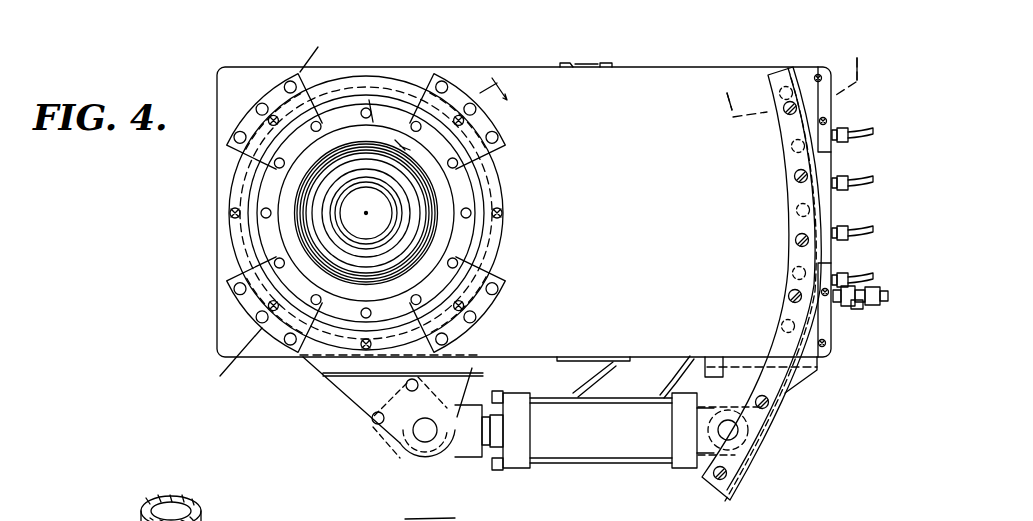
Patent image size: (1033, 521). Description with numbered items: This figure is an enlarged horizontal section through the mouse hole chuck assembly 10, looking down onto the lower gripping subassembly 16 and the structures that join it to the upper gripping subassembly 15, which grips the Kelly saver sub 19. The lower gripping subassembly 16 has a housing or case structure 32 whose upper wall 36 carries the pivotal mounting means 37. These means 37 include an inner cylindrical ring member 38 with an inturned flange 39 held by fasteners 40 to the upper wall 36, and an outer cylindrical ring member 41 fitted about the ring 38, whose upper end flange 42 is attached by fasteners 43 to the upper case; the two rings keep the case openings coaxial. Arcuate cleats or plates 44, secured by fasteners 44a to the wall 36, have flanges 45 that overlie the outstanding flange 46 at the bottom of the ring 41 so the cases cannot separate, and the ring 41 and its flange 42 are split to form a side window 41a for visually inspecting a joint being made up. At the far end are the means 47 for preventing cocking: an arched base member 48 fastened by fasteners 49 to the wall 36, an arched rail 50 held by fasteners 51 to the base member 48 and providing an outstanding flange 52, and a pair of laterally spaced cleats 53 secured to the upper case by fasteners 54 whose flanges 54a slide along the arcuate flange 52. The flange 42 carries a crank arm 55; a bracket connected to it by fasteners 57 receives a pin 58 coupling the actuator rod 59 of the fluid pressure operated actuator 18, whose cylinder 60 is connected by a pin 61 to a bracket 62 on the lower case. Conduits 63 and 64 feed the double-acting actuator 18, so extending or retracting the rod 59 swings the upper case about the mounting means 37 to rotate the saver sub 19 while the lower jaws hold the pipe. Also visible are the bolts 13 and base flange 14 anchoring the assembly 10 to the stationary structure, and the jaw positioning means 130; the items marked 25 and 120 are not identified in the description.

The mouse hole chuck assembly 10 is at (524, 51).
The bolts 13 is at (788, 63).
The base flange 14 is at (462, 112).
The upper gripping subassembly 15 is at (302, 498).
The lower gripping subassembly 16 is at (697, 56).
The fluid pressure operated actuator 18 is at (650, 466).
The Kelly saver sub 19 is at (146, 516).
The sleeve 25 is at (228, 510).
The housing or case structure 32 is at (649, 66).
The upper wall 36 is at (524, 212).
The mounting means 37 is at (500, 143).
The cylindrical ring member 38 is at (497, 172).
The inturned flange 39 is at (457, 235).
The fasteners 40 is at (262, 220).
The outer cylindrical ring member 41 is at (248, 180).
The side window 41a is at (370, 103).
The upper end flange 42 is at (228, 188).
The fasteners 43 is at (231, 213).
The arcuate cleats or plates 44 is at (275, 78).
The fasteners 44a is at (252, 210).
The flanges 45 is at (500, 258).
The outstanding flange 46 is at (518, 239).
The means for holding the cases against cocking 47 is at (774, 57).
The arched base member 48 is at (785, 392).
The fasteners 49 is at (788, 255).
The arched rail 50 is at (785, 168).
The fasteners 51 is at (789, 108).
The outstanding flange 52 is at (780, 420).
The cleats 53 is at (828, 113).
The fasteners 54 is at (818, 73).
The flanges 54a is at (790, 303).
The crank arm 55 is at (345, 385).
The fasteners 57 is at (372, 419).
The pin 58 is at (418, 435).
The actuator rod 59 is at (489, 450).
The cylinder 60 is at (575, 435).
The pin 61 is at (731, 432).
The bracket 62 is at (723, 375).
The conduit 63 is at (690, 356).
The conduit 64 is at (611, 360).
The pipe 120 is at (468, 511).
The jaw positioning means 130 is at (587, 48).